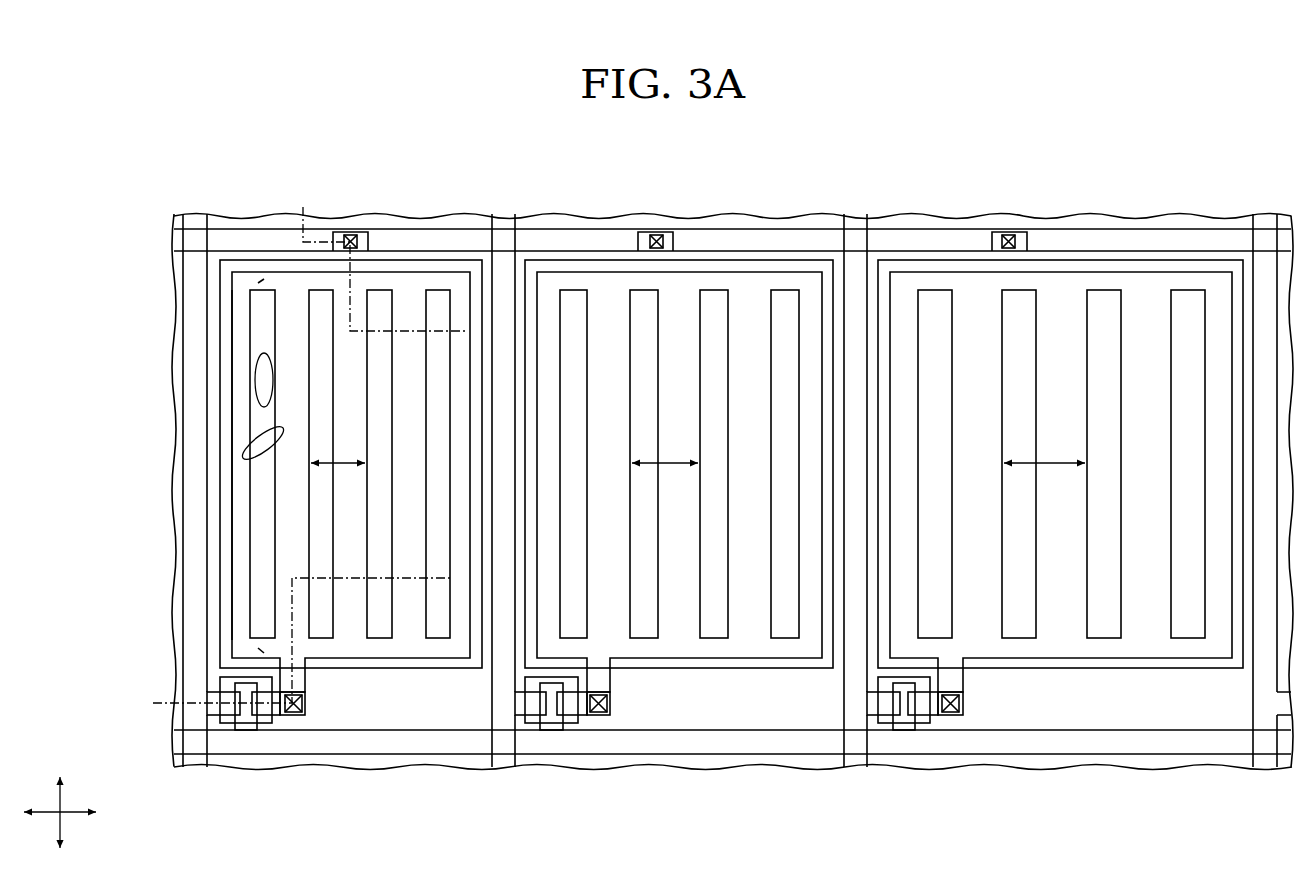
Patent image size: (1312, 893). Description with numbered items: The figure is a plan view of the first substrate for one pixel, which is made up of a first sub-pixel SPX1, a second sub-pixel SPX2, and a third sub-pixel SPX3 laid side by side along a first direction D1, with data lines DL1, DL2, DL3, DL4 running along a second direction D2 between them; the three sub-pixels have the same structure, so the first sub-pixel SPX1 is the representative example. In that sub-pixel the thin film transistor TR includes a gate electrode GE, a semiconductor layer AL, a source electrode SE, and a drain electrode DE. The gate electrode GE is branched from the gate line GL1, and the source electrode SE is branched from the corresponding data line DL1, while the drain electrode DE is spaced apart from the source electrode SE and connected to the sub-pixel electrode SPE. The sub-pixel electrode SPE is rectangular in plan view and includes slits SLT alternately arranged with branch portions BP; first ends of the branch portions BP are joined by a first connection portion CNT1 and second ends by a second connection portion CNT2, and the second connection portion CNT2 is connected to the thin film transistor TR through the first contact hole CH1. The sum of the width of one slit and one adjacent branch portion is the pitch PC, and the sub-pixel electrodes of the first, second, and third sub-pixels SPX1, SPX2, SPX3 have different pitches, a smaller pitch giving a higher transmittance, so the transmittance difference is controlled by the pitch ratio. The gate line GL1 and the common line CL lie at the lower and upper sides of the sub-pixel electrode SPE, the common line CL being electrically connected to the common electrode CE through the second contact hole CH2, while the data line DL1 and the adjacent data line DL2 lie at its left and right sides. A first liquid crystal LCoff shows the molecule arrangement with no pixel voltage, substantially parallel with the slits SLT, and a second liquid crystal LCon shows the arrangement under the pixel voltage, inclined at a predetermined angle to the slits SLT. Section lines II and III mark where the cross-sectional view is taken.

The data line DL1 is at (200, 216).
The data line DL2 is at (503, 216).
The data line DL3 is at (855, 216).
The data line DL4 is at (1265, 216).
The common line CL is at (176, 242).
The gate line GL1 is at (178, 741).
The common electrode CE is at (218, 262).
The first contact hole CH1 is at (307, 704).
The second contact hole CH2 is at (351, 218).
The first sub-pixel SPX1 is at (252, 492).
The second sub-pixel SPX2 is at (738, 196).
The third sub-pixel SPX3 is at (1111, 196).
The sub-pixel electrode SPE is at (252, 482).
The slit SLT is at (264, 508).
The branch portion BP is at (241, 428).
The first connection portion CNT1 is at (262, 281).
The second connection portion CNT2 is at (176, 595).
The thin film transistor TR is at (246, 767).
The source electrode SE is at (213, 717).
The semiconductor layer AL is at (245, 725).
The gate electrode GE is at (257, 732).
The drain electrode DE is at (279, 758).
The pitch PC is at (338, 452).
The first liquid crystal LCoff is at (271, 360).
The second liquid crystal LCon is at (283, 428).
The section line III-III' III is at (382, 258).
The section line II-II' II is at (305, 637).
The first direction D1 is at (74, 812).
The second direction D2 is at (60, 797).